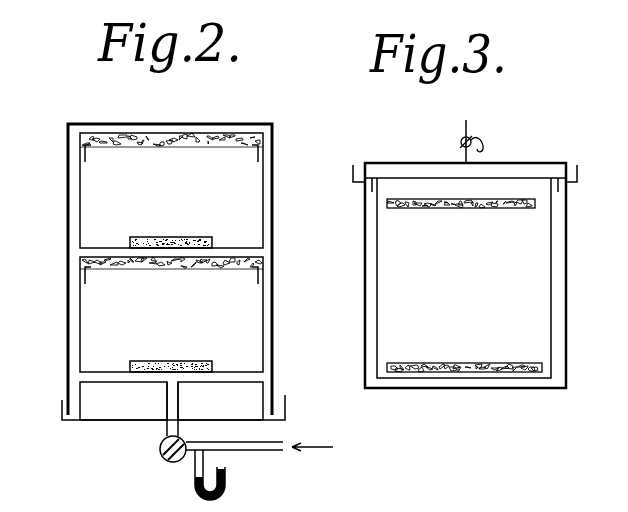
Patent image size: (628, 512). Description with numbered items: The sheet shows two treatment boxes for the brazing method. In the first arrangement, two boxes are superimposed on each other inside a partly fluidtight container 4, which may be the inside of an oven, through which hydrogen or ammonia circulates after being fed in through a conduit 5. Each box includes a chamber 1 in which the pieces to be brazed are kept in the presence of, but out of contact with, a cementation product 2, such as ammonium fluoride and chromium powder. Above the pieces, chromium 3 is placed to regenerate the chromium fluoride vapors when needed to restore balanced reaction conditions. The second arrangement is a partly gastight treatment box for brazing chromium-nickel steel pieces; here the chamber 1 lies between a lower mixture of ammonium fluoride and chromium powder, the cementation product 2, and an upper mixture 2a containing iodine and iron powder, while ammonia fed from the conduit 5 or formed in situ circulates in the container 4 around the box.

In FIG. 2, the chamber 1 is at (230, 180).
In FIG. 3, the chamber 1 is at (527, 273).
In FIG. 2, the cementation product 2 is at (182, 236).
In FIG. 3, the cementation product 2 is at (490, 353).
In FIG. 3, the upper mixture 2a is at (517, 210).
In FIG. 2, the chromium 3 is at (208, 131).
In FIG. 2, the container 4 is at (67, 182).
In FIG. 3, the container 4 is at (366, 335).
In FIG. 2, the conduit 5 is at (262, 449).
In FIG. 3, the conduit 5 is at (469, 128).